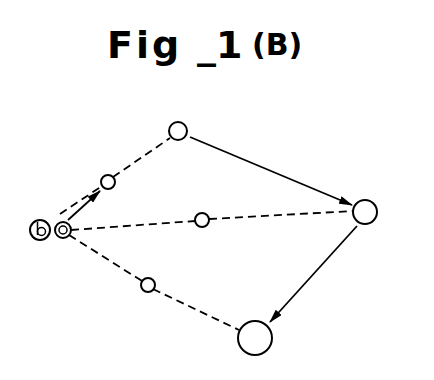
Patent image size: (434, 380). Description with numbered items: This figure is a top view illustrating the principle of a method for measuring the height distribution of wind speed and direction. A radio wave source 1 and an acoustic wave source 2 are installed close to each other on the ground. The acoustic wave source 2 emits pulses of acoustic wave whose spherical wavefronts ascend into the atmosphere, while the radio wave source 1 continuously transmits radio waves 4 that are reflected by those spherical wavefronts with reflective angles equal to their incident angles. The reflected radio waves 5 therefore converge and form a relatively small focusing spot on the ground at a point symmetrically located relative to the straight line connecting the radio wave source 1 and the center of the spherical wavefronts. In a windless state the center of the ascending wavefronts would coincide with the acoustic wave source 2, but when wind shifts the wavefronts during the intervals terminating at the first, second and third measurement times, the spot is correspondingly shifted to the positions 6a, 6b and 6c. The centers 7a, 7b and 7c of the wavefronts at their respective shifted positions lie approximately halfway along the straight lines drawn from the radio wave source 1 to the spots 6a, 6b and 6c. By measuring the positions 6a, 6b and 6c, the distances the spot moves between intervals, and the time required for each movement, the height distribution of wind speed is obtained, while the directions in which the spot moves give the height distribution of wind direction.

The radio wave source 1 is at (38, 219).
The acoustic wave source 2 is at (62, 240).
The radio waves 4 is at (73, 207).
The reflected radio waves 5 is at (152, 150).
The spot position 6a is at (187, 129).
The spot position 6b is at (362, 198).
The spot position 6c is at (268, 343).
The center of wavefront 7a is at (108, 175).
The center of wavefront 7b is at (205, 225).
The center of wavefront 7c is at (142, 292).